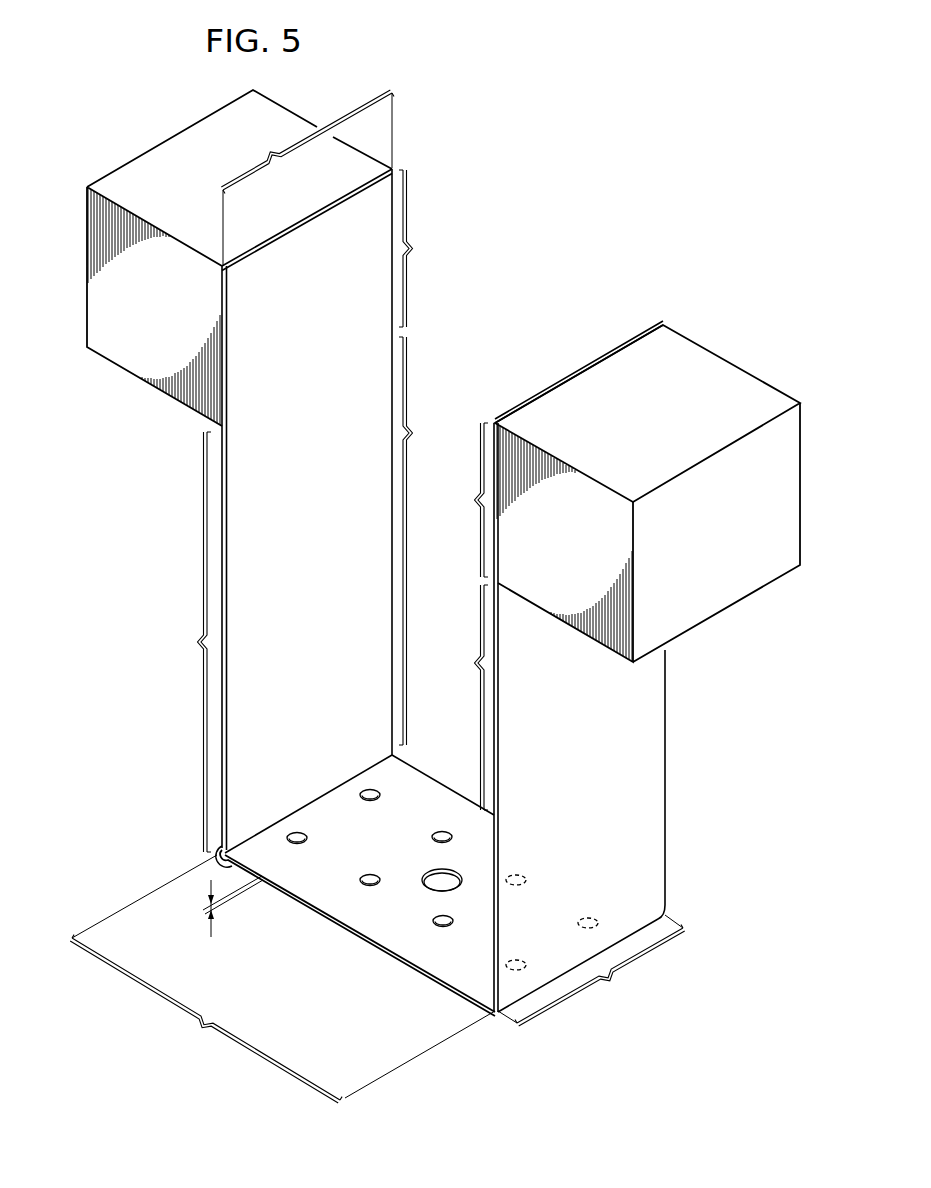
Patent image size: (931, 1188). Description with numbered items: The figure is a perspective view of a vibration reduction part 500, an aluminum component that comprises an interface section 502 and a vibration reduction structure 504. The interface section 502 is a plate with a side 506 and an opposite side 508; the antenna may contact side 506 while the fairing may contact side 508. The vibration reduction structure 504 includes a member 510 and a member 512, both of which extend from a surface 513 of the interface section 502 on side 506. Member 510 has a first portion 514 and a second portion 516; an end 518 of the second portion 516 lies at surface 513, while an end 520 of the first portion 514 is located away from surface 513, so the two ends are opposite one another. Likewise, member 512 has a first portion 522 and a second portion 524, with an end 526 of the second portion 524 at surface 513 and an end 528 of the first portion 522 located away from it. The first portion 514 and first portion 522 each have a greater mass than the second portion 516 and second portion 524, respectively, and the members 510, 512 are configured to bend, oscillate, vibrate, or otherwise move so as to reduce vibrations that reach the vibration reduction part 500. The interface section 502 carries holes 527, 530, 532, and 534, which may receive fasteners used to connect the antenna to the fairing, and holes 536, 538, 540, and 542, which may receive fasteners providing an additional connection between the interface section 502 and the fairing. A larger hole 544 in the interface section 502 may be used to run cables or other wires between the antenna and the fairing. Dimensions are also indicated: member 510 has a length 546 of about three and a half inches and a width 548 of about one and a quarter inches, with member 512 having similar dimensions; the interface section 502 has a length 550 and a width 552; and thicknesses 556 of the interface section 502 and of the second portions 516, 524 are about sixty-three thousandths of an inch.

The vibration reduction part 500 is at (590, 184).
The interface section 502 is at (367, 951).
The vibration reduction structure 504 is at (754, 366).
The side 506 is at (345, 912).
The side 508 is at (290, 895).
The member 510 is at (331, 527).
The member 512 is at (599, 731).
The surface 513 is at (418, 770).
The first portion 514 is at (426, 248).
The second portion 516 is at (426, 541).
The end 518 is at (242, 866).
The end 520 is at (157, 168).
The first portion 522 is at (461, 500).
The second portion 524 is at (461, 697).
The end 526 is at (668, 922).
The hole 527 is at (366, 871).
The end 528 is at (688, 360).
The hole 530 is at (438, 828).
The hole 532 is at (518, 870).
The hole 534 is at (434, 915).
The hole 536 is at (368, 786).
The hole 538 is at (591, 912).
The hole 540 is at (518, 953).
The hole 542 is at (296, 829).
The hole 544 is at (430, 868).
The length 546 is at (184, 642).
The width 548 is at (307, 177).
The length 550 is at (282, 979).
The width 552 is at (591, 970).
The thicknesses 556 is at (208, 938).